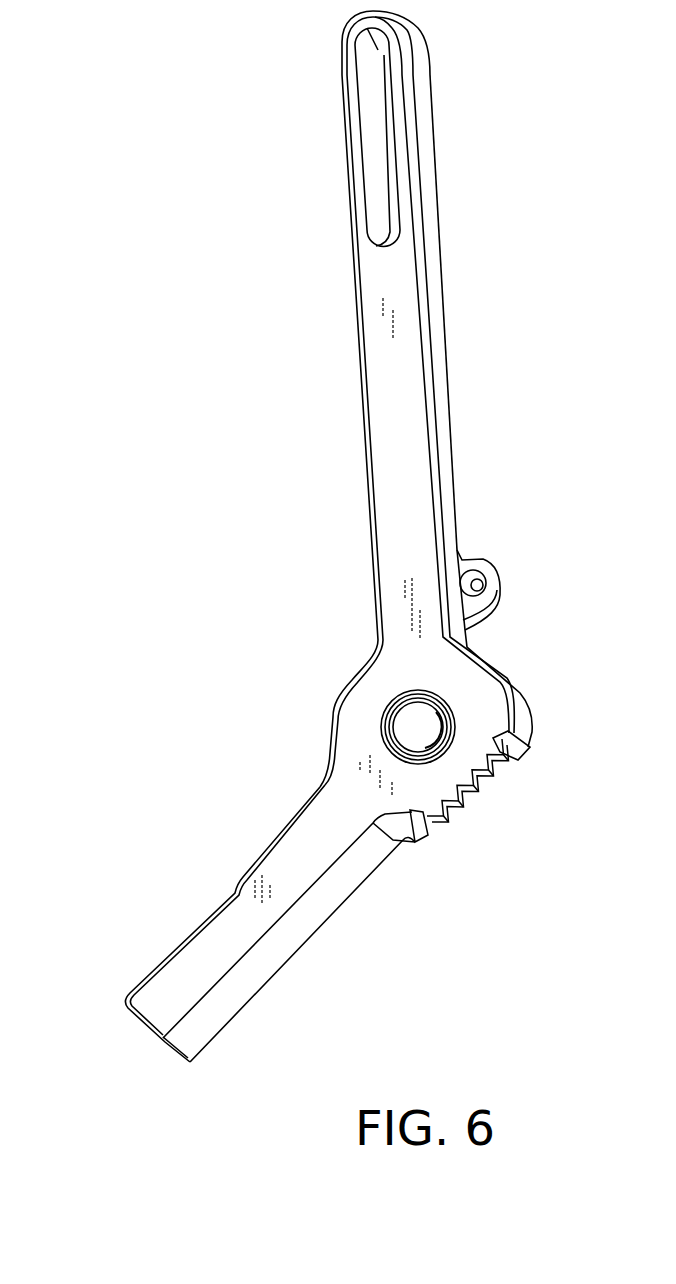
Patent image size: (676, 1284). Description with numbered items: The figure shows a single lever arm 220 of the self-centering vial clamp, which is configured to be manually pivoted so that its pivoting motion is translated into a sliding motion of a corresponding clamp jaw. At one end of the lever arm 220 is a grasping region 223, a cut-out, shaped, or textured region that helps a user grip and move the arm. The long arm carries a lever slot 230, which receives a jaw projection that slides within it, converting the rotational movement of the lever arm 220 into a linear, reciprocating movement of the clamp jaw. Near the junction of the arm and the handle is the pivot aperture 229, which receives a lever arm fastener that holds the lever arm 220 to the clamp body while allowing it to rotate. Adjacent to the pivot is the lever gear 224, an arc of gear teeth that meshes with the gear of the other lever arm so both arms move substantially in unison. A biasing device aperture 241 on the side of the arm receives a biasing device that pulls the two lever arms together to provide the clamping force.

The lever arm 220 is at (148, 528).
The grasping region 223 is at (220, 860).
The lever gear 224 is at (558, 768).
The pivot aperture 229 is at (405, 729).
The lever slot 230 is at (387, 152).
The biasing device aperture 241 is at (480, 583).